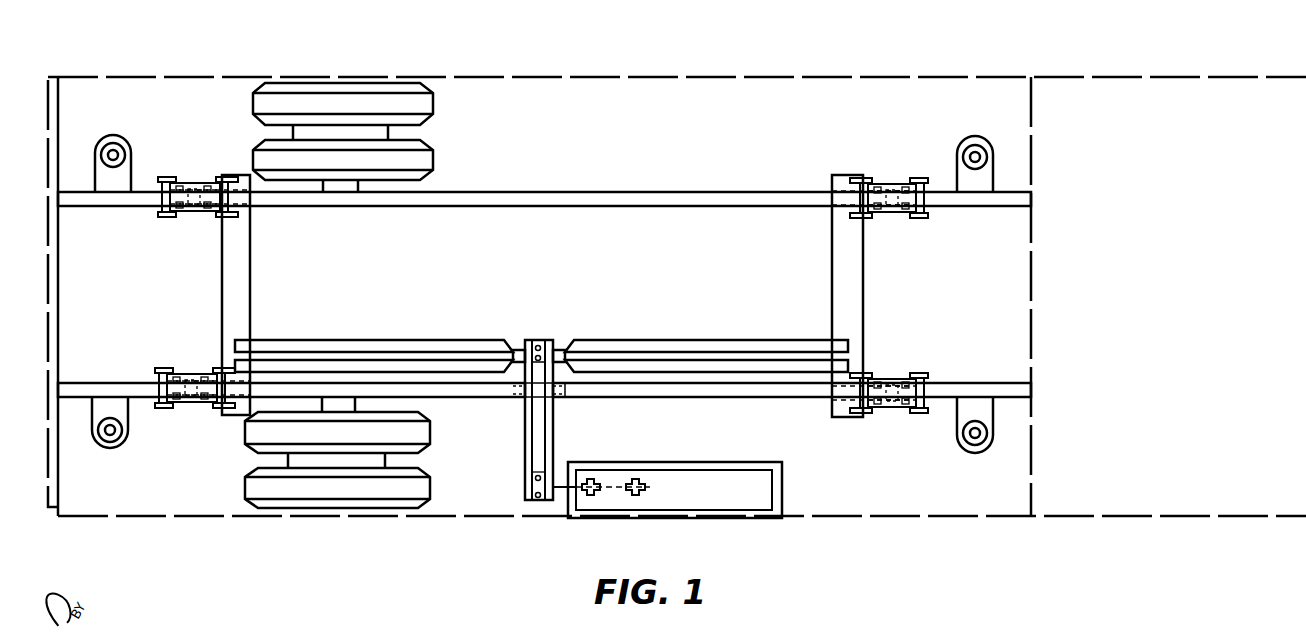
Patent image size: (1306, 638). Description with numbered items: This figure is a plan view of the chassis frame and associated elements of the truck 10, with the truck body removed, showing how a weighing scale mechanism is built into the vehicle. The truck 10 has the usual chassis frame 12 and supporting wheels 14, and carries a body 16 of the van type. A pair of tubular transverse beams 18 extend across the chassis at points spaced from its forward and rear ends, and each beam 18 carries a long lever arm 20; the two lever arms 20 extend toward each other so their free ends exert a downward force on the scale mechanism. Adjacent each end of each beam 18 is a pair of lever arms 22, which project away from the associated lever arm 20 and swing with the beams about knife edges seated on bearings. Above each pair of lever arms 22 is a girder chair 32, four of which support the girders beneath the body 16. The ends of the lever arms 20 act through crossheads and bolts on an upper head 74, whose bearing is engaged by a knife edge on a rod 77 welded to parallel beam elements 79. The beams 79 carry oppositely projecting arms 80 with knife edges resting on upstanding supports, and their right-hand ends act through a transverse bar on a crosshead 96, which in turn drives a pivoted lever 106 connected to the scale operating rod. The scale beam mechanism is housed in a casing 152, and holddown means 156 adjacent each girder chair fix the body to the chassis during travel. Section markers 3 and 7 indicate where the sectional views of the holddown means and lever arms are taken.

The truck 10 is at (771, 191).
The chassis frame 12 is at (639, 196).
The supporting wheels 14 is at (433, 104).
The body 16 is at (1289, 76).
The transverse beams 18 is at (250, 242).
The lever arm 20 is at (415, 340).
The lever arms 22 is at (162, 176).
The girder chair 32 is at (191, 209).
The upper head 74 is at (536, 345).
The rod 77 is at (560, 350).
The beam elements 79 is at (525, 418).
The arms 80 is at (557, 400).
The crosshead 96 is at (527, 498).
The lever 106 is at (604, 480).
The casing 152 is at (783, 476).
The holddown means 156 is at (99, 139).
The section line 3- 3 is at (110, 373).
The section line 7- 7 is at (150, 403).